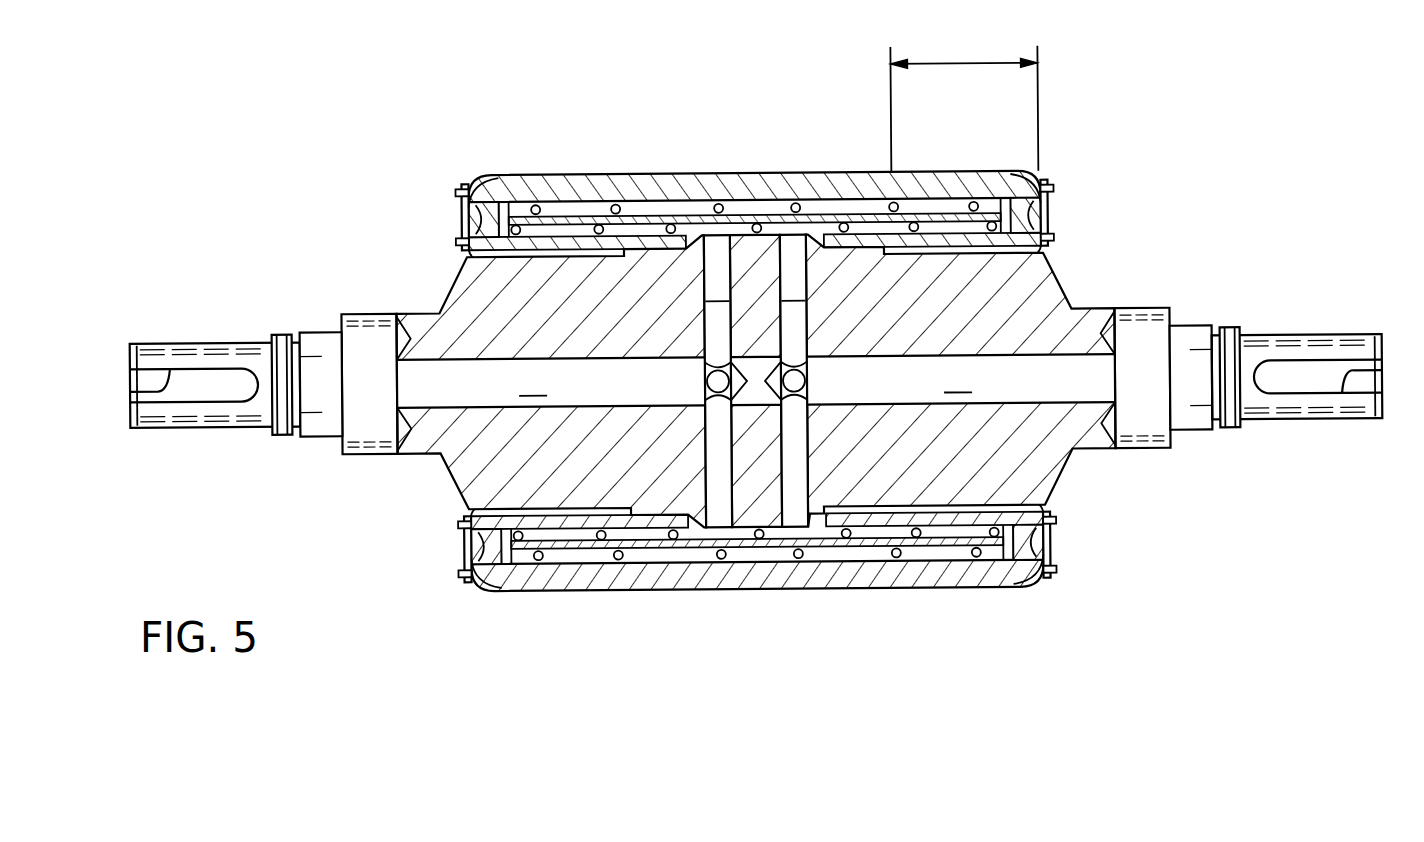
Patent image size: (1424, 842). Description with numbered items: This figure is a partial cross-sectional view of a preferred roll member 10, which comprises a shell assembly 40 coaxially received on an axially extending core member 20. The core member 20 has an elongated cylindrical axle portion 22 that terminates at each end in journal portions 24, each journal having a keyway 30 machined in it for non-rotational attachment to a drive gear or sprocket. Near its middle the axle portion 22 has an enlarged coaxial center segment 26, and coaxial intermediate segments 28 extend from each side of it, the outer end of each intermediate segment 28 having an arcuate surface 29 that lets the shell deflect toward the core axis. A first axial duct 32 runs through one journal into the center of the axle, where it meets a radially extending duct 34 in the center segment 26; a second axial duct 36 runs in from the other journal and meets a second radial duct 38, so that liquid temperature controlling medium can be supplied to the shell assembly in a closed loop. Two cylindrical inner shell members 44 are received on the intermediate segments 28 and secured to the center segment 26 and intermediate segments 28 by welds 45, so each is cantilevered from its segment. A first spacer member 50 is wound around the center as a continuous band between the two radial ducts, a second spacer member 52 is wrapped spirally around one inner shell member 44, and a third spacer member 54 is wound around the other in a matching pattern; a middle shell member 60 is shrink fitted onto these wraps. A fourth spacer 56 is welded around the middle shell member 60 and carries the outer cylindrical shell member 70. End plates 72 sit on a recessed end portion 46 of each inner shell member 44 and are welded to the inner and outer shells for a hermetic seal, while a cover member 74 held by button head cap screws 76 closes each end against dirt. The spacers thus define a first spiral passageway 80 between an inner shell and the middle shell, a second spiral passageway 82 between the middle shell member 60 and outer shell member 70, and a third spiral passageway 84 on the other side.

The roll member 10 is at (751, 354).
The core member 20 is at (1084, 464).
The axle portion 22 is at (1132, 290).
The journal portions 24 is at (210, 329).
The center segment 26 is at (757, 569).
The intermediate segments 28 is at (660, 205).
The arcuate surface 29 is at (596, 205).
The keyway 30 is at (752, 380).
The first axial passageway or duct 32 is at (589, 382).
The radially extending duct 34 is at (726, 381).
The second axial passageway or duct 36 is at (961, 379).
The radially extending duct 38 is at (786, 381).
The shell assembly 40 is at (772, 602).
The inner shell members 44 is at (490, 258).
The welds 45 is at (712, 205).
The recessed end portion 46 is at (755, 232).
The first spacer member 50 is at (756, 370).
The second spacer member 52 is at (455, 377).
The third spacer member 54 is at (1054, 351).
The fourth spacer 56 is at (756, 387).
The middle shell member 60 is at (755, 358).
The outer cylindrical shell member 70 is at (523, 178).
The end plates 72 is at (466, 178).
The cover member 74 is at (463, 212).
The button head cap screws 76 is at (462, 240).
The first spiral passageway 80 is at (560, 222).
The second spiral passageway 82 is at (605, 200).
The third spiral passageway 84 is at (978, 196).